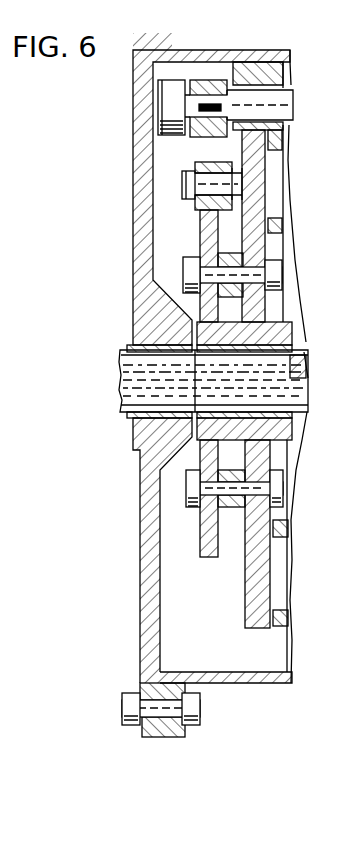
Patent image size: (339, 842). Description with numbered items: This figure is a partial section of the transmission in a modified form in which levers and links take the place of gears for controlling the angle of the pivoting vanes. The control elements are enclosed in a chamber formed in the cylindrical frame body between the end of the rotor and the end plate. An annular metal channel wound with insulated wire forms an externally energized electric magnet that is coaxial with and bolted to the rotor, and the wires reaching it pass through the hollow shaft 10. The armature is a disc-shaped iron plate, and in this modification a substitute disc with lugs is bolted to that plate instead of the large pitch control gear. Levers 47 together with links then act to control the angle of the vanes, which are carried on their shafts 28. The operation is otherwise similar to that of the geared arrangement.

The hollow shaft 10 is at (213, 381).
The shaft of pivoting vane 28 is at (233, 95).
The lever 47 is at (193, 156).